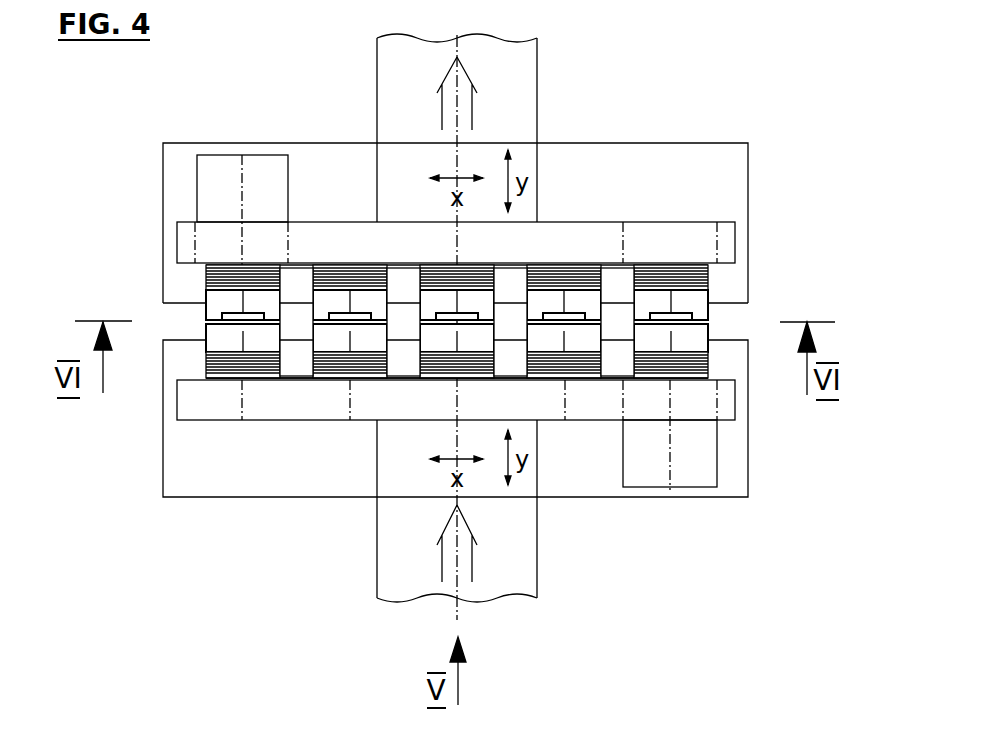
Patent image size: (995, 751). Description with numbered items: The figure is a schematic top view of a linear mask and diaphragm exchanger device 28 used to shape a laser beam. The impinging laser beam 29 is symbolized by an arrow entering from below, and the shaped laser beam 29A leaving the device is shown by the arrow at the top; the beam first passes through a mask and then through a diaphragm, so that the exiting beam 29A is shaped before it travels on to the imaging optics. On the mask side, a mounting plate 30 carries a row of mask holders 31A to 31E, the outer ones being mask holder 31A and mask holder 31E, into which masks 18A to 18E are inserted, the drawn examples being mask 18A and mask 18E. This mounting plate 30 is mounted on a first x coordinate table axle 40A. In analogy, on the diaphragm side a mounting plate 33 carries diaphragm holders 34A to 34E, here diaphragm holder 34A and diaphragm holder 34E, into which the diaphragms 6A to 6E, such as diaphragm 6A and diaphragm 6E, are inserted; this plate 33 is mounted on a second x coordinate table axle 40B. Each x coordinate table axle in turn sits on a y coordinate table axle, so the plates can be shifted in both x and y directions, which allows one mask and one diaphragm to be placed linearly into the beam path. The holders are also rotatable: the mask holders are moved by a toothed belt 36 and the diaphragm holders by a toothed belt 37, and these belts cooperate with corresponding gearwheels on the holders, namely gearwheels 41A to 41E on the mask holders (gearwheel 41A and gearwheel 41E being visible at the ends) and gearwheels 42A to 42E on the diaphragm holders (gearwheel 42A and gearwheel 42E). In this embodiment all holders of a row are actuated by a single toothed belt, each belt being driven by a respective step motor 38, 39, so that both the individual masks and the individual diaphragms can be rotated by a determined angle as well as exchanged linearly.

The linear exchanger device 28 is at (683, 135).
The shaped laser beam 29A is at (462, 100).
The impinging laser beam 29 is at (462, 547).
The mounting plate for diaphragm holders 33 is at (725, 228).
The mounting plate for mask holders 30 is at (727, 410).
The toothed belt 36 is at (685, 363).
The toothed belt 37 is at (295, 275).
The step motor 38 is at (688, 468).
The step motor 39 is at (213, 170).
The first x coordinate table axle 40A is at (256, 463).
The second x coordinate table axle 40B is at (720, 185).
The gearwheel 42A is at (213, 267).
The gearwheel 42E is at (678, 268).
The diaphragm holder 34A is at (215, 302).
The diaphragm holder 34E is at (697, 302).
The diaphragm 6A is at (227, 315).
The diaphragm 6E is at (680, 315).
The mask 18A is at (217, 323).
The mask 18E is at (683, 325).
The mask holder 31A is at (217, 333).
The mask holder 31E is at (695, 335).
The gearwheel 41A is at (222, 372).
The gearwheel 41E is at (677, 375).